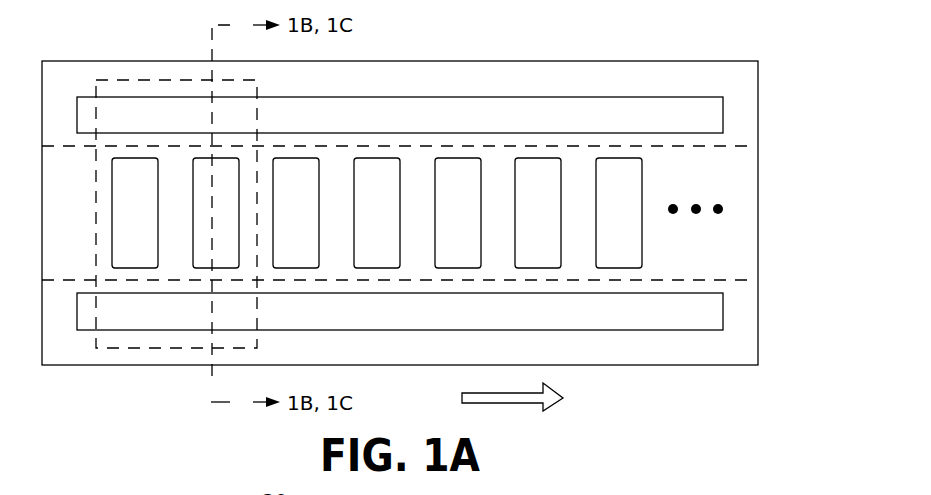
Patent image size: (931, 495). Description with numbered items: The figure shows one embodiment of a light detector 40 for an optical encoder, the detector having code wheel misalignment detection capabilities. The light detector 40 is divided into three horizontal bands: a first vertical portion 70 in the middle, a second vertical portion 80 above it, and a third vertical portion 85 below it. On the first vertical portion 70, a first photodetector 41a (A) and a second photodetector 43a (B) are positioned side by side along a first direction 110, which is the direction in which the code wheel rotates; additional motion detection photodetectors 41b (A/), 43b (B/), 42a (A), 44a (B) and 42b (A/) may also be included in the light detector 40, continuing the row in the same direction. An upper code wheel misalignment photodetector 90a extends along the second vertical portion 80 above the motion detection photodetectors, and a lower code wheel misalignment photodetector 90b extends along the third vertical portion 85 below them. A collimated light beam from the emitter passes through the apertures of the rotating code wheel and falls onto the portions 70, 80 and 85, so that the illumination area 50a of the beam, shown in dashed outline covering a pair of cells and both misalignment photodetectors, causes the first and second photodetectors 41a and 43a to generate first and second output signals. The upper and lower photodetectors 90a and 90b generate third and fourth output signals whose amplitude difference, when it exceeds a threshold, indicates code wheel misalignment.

The light detector 40 is at (417, 184).
The illumination area 50a is at (97, 80).
The first vertical portion 70 is at (745, 184).
The second vertical portion 80 is at (740, 100).
The third vertical portion 85 is at (740, 324).
The upper code wheel misalignment photodetector 90a is at (620, 124).
The lower code wheel misalignment photodetector 90b is at (620, 321).
The first photodetector 41a is at (116, 237).
The second photodetector 43a is at (197, 237).
The additional motion detection photodetector 41b is at (277, 237).
The additional motion detection photodetector 43b is at (358, 237).
The additional motion detection photodetector 42a is at (439, 237).
The additional motion detection photodetector 44a is at (519, 237).
The additional motion detection photodetector 42b is at (600, 237).
The first direction 110 is at (507, 403).